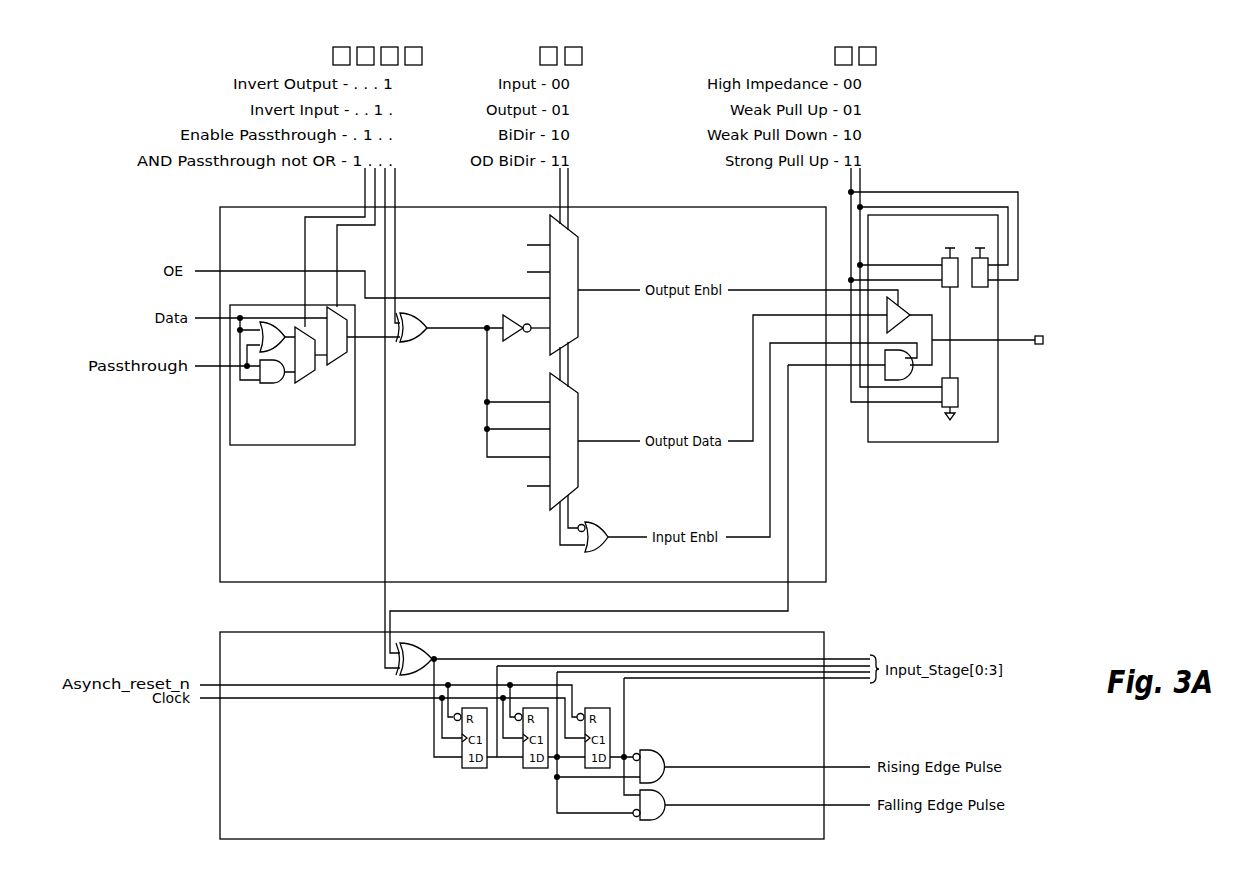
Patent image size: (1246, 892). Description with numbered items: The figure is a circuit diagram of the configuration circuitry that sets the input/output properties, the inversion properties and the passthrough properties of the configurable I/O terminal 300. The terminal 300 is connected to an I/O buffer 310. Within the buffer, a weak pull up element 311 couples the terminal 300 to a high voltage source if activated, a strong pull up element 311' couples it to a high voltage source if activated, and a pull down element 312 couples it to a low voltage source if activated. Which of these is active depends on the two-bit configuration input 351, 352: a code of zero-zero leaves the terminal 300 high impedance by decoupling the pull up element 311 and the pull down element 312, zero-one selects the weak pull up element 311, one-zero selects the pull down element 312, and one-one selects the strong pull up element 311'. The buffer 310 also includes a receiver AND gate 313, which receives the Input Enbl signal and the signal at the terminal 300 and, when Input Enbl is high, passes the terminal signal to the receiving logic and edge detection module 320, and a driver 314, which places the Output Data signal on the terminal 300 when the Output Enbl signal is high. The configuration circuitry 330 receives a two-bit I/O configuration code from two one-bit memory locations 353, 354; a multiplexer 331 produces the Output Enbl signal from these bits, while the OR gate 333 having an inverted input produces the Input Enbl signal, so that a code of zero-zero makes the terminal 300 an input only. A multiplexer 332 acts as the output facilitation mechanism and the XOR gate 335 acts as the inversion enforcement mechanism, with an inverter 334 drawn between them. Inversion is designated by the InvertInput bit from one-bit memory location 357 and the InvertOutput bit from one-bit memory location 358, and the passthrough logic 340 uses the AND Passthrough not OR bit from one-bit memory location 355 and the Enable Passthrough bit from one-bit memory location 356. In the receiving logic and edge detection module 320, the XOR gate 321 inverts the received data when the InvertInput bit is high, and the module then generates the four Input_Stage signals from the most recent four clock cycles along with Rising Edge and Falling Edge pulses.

The configurable I/O terminal 300 is at (1043, 340).
The I/O buffer 310 is at (933, 328).
The weak pull up element 311 is at (996, 285).
The strong pull up element 311' is at (1023, 275).
The pull down element 312 is at (957, 378).
The receiver AND gate 313 is at (890, 380).
The driver 314 is at (908, 305).
The receiving logic and edge detection module 320 is at (522, 735).
The XOR gate 321 is at (425, 646).
The configuration circuitry 330 is at (523, 394).
The multiplexer 331 is at (578, 252).
The multiplexer 332 is at (578, 413).
The OR gate having inverted input 333 is at (593, 523).
The inverter 334 is at (513, 341).
The XOR gate 335 is at (420, 342).
The passthrough logic 340 is at (315, 375).
The configuration input 351 is at (844, 47).
The configuration input 352 is at (868, 47).
The one-bit memory location 353 is at (549, 47).
The one-bit memory location 354 is at (574, 47).
The one-bit memory location 355 is at (341, 47).
The one-bit memory location 356 is at (366, 47).
The one-bit memory location 357 is at (389, 47).
The one-bit memory location 358 is at (413, 47).